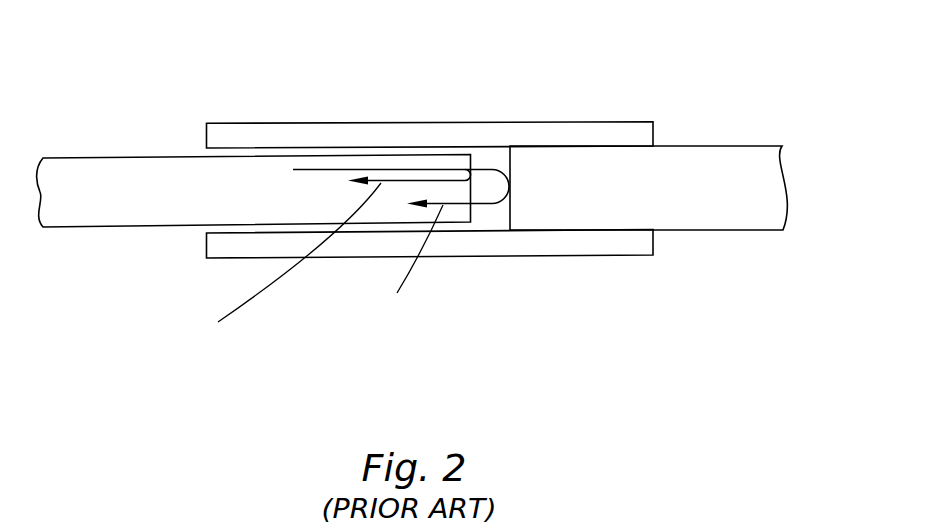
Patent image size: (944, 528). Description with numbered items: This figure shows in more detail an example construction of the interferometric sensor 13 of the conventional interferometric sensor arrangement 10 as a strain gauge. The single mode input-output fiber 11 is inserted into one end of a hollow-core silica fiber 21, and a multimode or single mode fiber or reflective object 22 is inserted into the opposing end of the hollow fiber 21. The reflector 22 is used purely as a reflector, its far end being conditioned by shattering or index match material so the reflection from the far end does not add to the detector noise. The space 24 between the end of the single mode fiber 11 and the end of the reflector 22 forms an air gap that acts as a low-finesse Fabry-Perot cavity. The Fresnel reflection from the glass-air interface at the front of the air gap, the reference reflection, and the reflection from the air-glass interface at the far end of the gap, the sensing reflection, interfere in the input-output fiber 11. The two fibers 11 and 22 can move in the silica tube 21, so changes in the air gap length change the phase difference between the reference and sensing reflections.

The interferometric sensor arrangement 10 is at (68, 42).
The input-output fiber 11 is at (102, 158).
The interferometric sensor 13 is at (630, 76).
The hollow-core silica fiber 21 is at (436, 122).
The reflector 22 is at (710, 146).
The space 24 is at (488, 219).